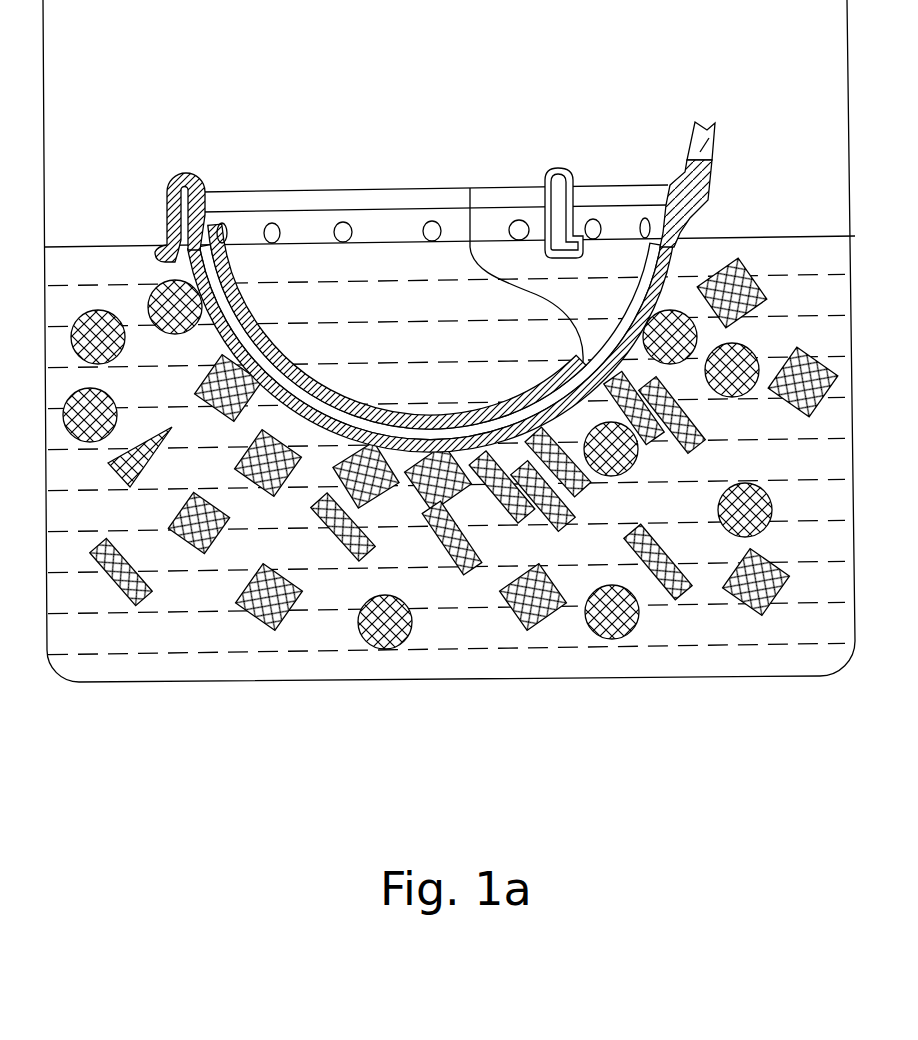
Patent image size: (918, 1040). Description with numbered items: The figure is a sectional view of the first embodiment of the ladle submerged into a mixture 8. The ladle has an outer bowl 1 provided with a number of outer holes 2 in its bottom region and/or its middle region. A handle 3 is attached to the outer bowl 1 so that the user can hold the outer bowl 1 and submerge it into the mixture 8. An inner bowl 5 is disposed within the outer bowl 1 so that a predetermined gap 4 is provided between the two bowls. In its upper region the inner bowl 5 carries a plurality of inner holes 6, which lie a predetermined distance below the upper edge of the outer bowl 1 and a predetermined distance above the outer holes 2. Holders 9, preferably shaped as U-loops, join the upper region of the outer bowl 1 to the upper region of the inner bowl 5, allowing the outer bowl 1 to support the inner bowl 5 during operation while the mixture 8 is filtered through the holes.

The outer bowl 1 is at (522, 448).
The outer holes 2 is at (312, 425).
The handle 3 is at (708, 127).
The gap 4 is at (363, 423).
The inner bowl 5 is at (432, 427).
The inner holes 6 is at (342, 232).
The mixture 8 is at (468, 607).
The holders 9 is at (568, 187).